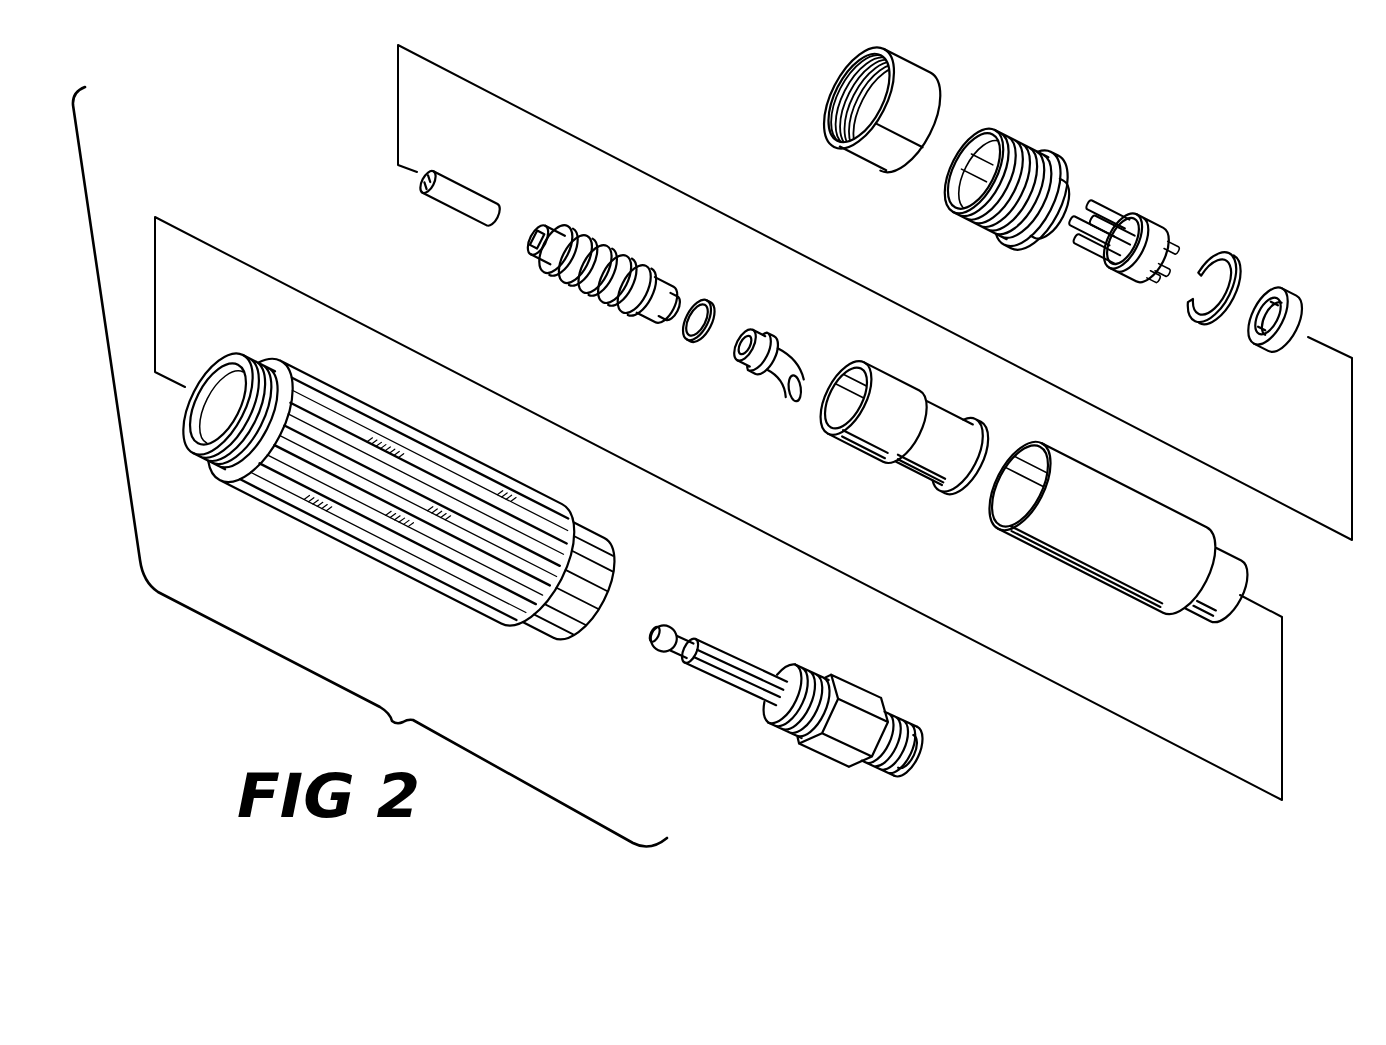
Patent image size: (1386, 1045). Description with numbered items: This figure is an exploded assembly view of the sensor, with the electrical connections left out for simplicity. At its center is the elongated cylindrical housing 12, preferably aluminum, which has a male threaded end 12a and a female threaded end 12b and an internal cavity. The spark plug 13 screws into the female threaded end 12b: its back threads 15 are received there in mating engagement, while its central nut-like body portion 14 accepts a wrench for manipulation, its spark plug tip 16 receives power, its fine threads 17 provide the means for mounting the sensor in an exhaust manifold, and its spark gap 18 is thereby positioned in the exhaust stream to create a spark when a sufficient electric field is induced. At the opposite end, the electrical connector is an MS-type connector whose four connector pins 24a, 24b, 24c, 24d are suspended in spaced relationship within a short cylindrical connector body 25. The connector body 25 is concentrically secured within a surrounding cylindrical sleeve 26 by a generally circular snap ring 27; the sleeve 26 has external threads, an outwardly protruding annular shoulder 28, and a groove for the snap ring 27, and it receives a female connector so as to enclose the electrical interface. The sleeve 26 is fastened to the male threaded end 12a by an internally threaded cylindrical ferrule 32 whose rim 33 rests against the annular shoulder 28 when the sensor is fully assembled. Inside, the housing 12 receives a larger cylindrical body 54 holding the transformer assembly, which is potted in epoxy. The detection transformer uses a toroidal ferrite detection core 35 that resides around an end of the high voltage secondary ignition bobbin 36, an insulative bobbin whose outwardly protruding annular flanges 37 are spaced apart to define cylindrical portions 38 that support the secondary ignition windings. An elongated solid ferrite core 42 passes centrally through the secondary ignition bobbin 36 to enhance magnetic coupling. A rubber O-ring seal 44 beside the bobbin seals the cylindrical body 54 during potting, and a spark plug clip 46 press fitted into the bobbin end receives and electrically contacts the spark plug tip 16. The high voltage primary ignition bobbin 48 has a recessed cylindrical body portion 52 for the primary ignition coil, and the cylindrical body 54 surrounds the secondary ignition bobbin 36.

The housing 12 is at (398, 528).
The male threaded end 12a is at (193, 472).
The female threaded end 12b is at (527, 650).
The spark plug 13 is at (793, 718).
The nut-like body portion 14 is at (833, 676).
The back threads 15 is at (807, 670).
The spark plug tip 16 is at (658, 646).
The fine threads 17 is at (902, 722).
The spark gap 18 is at (911, 784).
The connector pin 24a is at (1085, 238).
The connector pin 24b is at (1107, 268).
The connector pin 24c is at (1110, 208).
The connector pin 24d is at (1080, 203).
The connector body 25 is at (1135, 226).
The sleeve 26 is at (1013, 196).
The snap ring 27 is at (1023, 137).
The annular shoulder 28 is at (1047, 146).
The ferrule 32 is at (893, 103).
The rim 33 is at (868, 58).
The toroidal ferrite detection core 35 is at (1280, 294).
The secondary ignition bobbin 36 is at (605, 294).
The annular flanges 37 is at (610, 304).
The cylindrical portions 38 is at (623, 248).
The ferrite core 42 is at (458, 182).
The O-ring seal 44 is at (687, 343).
The spark plug clip 46 is at (775, 377).
The primary ignition bobbin 48 is at (904, 418).
The recessed cylindrical body portion 52 is at (915, 456).
The cylindrical body 54 is at (1077, 557).